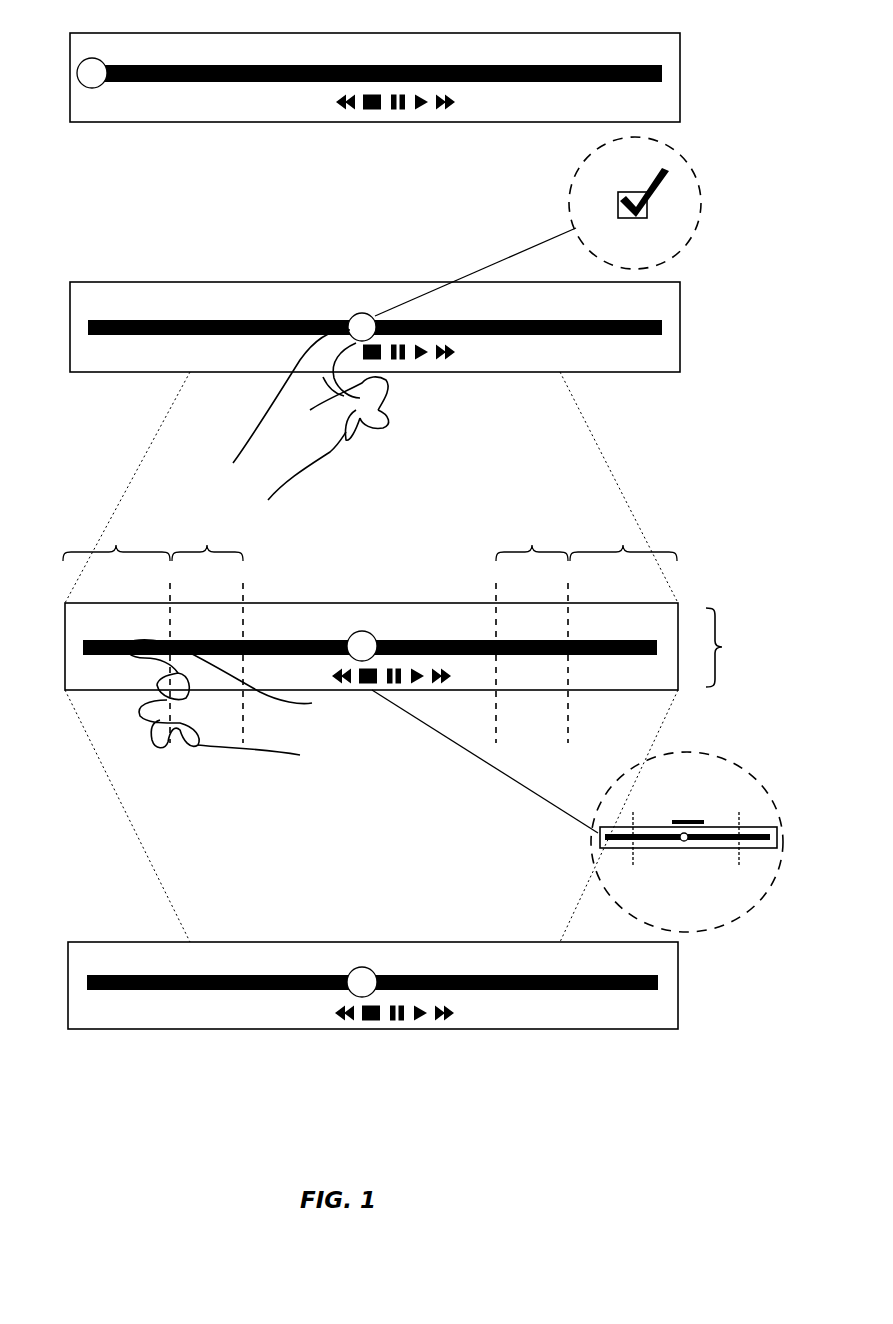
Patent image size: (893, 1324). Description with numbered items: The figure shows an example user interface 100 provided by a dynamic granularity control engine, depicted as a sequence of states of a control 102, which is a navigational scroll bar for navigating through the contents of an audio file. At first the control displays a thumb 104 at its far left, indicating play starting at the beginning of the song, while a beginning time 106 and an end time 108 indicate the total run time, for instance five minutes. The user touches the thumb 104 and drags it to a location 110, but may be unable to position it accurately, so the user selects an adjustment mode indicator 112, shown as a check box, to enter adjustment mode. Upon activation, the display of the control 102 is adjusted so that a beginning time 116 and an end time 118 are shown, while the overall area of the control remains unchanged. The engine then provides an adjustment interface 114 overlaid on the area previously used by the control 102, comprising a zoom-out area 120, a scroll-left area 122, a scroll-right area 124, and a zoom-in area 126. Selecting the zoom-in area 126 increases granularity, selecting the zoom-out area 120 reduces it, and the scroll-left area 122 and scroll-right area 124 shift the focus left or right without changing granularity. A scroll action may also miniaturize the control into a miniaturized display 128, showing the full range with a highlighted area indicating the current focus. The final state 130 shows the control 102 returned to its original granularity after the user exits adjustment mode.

The user interface 100 is at (576, 1133).
The control 102 is at (373, 32).
The thumb 104 is at (93, 55).
The beginning time 106 is at (92, 114).
The end time 108 is at (667, 81).
The location 110 is at (346, 310).
The adjustment mode indicator 112 is at (649, 179).
The adjustment interface 114 is at (737, 647).
The beginning time 116 is at (100, 695).
The end time 118 is at (647, 696).
The zoom-out area 120 is at (116, 632).
The scroll-left area 122 is at (207, 632).
The scroll-right area 124 is at (532, 632).
The zoom-in area 126 is at (622, 632).
The miniaturized display 128 is at (702, 781).
The restored media player interface 130 is at (391, 937).